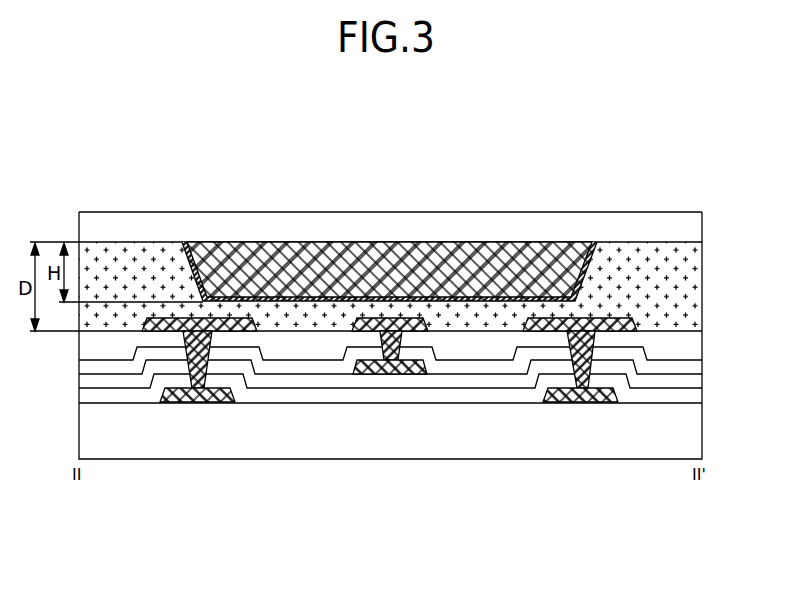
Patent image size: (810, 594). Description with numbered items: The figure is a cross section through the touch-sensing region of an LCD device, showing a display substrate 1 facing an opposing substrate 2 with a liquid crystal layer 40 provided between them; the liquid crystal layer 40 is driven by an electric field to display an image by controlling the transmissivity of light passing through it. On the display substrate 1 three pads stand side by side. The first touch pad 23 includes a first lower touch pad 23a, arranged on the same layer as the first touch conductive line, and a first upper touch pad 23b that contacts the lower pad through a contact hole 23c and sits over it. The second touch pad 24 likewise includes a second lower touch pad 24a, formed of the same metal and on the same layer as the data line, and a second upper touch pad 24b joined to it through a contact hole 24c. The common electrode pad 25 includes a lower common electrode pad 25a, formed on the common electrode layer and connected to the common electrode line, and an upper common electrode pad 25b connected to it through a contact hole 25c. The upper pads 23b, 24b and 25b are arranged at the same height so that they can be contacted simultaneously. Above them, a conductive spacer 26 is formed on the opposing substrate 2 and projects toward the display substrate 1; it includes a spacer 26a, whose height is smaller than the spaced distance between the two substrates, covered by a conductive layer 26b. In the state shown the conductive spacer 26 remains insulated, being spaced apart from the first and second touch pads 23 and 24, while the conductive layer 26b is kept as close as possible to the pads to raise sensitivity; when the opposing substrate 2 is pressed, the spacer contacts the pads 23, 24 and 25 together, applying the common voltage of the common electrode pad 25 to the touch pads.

The display substrate 1 is at (703, 434).
The opposing substrate 2 is at (702, 226).
The liquid crystal layer 40 is at (702, 285).
The conductive spacer 26 is at (389, 218).
The spacer 26a is at (437, 167).
The conductive layer 26b is at (417, 301).
The common electrode pad 25 is at (198, 428).
The lower common electrode pad 25a is at (198, 388).
The upper common electrode pad 25b is at (155, 332).
The contact hole 25c is at (212, 363).
The second touch pad 24 is at (390, 428).
The second lower touch pad 24a is at (389, 372).
The second upper touch pad 24b is at (362, 331).
The contact hole 24c is at (397, 343).
The first touch pad 23 is at (581, 428).
The first lower touch pad 23a is at (582, 400).
The first upper touch pad 23b is at (538, 331).
The contact hole 23c is at (590, 367).